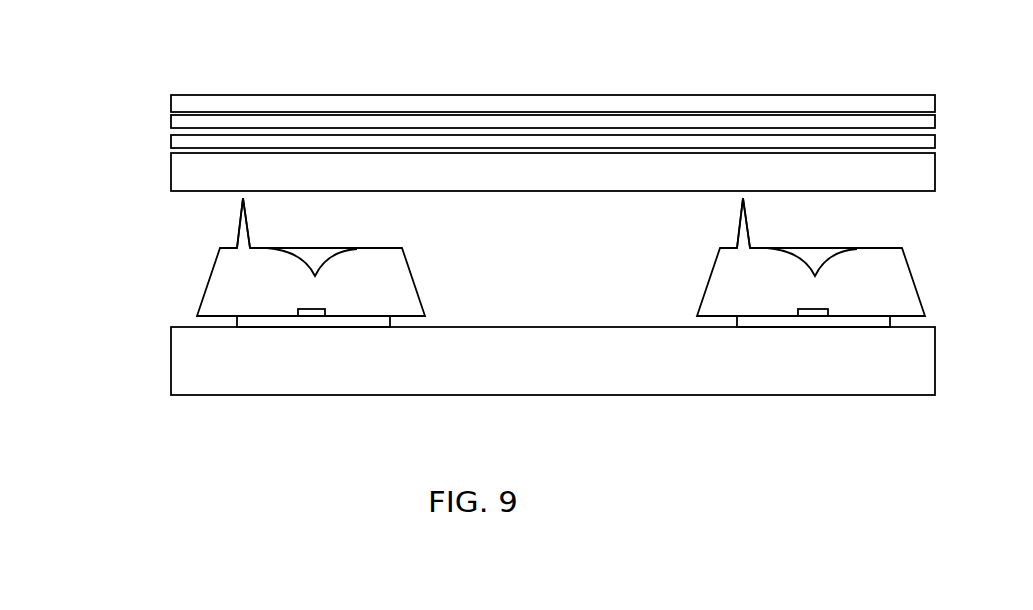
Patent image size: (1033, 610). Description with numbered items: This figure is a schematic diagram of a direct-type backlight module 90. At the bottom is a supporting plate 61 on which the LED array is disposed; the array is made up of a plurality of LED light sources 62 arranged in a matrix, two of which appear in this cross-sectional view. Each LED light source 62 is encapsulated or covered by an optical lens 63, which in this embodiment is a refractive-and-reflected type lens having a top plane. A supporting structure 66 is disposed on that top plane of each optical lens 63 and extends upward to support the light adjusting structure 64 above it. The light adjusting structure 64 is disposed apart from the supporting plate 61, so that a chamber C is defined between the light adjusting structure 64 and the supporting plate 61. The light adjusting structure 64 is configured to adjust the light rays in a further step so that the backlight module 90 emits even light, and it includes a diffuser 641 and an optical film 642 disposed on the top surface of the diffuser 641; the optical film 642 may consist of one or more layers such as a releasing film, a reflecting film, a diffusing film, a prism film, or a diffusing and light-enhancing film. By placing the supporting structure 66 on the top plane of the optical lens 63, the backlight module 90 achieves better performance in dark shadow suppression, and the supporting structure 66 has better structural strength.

The direct-type backlight module 90 is at (550, 66).
The chamber C is at (475, 208).
The light adjusting structure 64 is at (486, 154).
The optical film 642 is at (165, 95).
The diffuser 641 is at (513, 183).
The optical lens 63 is at (218, 277).
The supporting structure 66 is at (248, 237).
The LED light source 62 is at (318, 312).
The supporting plate 61 is at (178, 370).